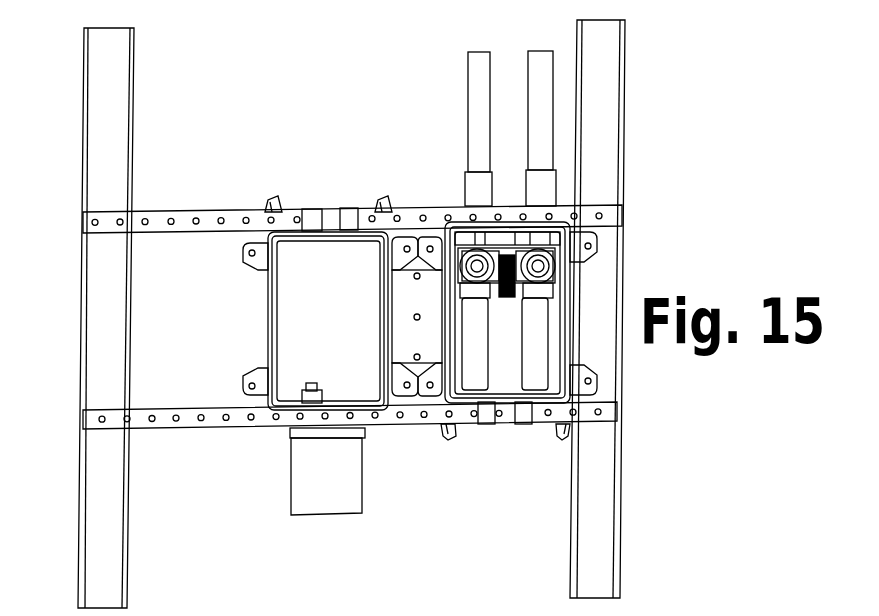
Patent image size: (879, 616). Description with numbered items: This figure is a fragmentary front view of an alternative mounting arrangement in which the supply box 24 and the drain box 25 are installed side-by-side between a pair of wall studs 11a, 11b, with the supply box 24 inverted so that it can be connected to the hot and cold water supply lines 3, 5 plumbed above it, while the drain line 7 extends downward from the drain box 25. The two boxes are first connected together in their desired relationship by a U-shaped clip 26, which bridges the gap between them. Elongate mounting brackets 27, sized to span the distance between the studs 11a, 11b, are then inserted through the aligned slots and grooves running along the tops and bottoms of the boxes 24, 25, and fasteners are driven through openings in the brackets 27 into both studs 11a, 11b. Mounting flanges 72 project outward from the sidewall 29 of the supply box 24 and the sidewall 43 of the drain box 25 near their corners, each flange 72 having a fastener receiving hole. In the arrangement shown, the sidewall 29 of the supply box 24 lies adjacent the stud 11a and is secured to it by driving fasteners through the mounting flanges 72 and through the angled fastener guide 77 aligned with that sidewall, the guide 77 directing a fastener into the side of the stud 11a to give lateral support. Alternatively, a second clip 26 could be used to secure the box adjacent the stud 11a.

The hot water supply line 3 is at (551, 114).
The cold water supply line 5 is at (468, 90).
The drain line 7 is at (363, 487).
The stud 11a is at (625, 62).
The stud 11b is at (135, 82).
The supply box 24 is at (450, 222).
The drain box 25 is at (263, 218).
The U-shaped clip 26 is at (403, 302).
The mounting bracket 27 is at (167, 212).
The sidewall 29 is at (570, 343).
The sidewall 43 is at (265, 350).
The mounting flange 72 is at (245, 262).
The fastener guide 77 is at (557, 433).